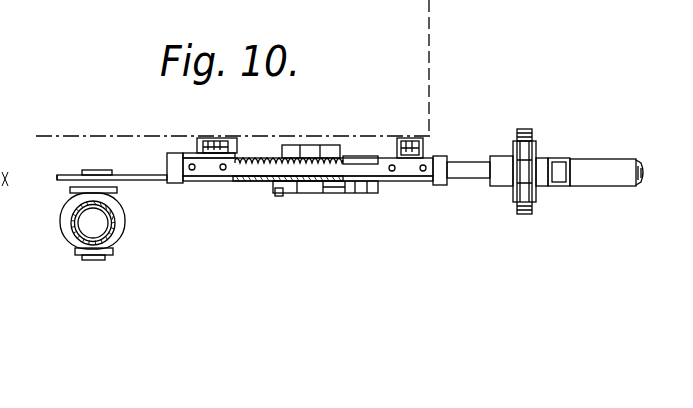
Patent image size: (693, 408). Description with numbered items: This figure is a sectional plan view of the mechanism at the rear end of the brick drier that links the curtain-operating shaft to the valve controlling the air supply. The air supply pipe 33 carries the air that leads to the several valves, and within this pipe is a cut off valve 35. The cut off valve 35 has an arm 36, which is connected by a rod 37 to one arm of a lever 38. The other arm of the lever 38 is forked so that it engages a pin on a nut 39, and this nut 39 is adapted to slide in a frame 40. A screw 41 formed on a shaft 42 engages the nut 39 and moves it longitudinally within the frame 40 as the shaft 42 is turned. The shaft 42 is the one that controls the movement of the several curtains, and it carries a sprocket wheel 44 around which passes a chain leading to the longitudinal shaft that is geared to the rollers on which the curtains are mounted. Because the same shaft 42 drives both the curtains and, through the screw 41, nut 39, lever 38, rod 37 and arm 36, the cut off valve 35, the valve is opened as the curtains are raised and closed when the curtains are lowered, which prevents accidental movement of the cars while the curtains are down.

The air supply pipe 33 is at (93, 223).
The cut off valve 35 is at (118, 243).
The arm 36 is at (60, 178).
The rod 37 is at (150, 181).
The lever 38 is at (328, 191).
The nut 39 is at (357, 158).
The frame 40 is at (255, 169).
The screw 41 is at (265, 157).
The shaft 42 is at (465, 170).
The sprocket wheel 44 is at (521, 213).